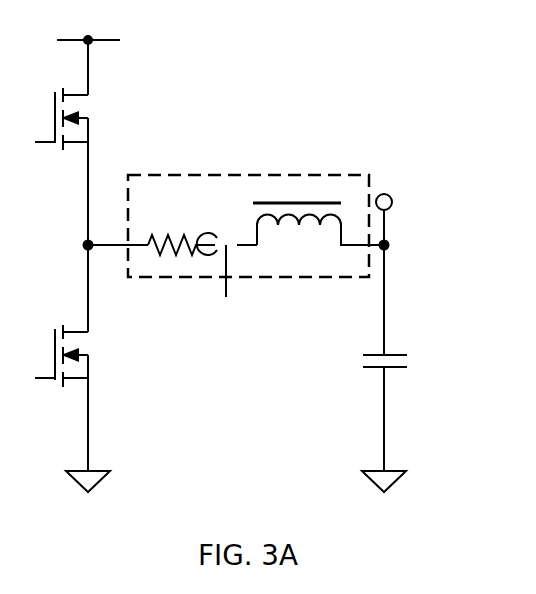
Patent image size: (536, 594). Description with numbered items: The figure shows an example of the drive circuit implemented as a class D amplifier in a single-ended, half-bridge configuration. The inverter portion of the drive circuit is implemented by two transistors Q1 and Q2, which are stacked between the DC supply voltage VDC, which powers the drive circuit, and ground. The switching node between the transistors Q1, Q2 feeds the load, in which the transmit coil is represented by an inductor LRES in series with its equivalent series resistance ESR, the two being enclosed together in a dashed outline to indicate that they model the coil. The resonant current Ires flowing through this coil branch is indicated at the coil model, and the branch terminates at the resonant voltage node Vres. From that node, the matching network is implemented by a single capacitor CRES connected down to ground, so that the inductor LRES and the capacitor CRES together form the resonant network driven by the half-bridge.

The DC supply voltage VDC is at (91, 29).
The transistor Q1 is at (89, 119).
The transistor Q2 is at (89, 356).
The equivalent series resistance ESR is at (181, 236).
The resonant current Ires is at (227, 283).
The inductor LRES is at (318, 213).
The resonant voltage node Vres is at (404, 188).
The capacitor CRES is at (408, 369).